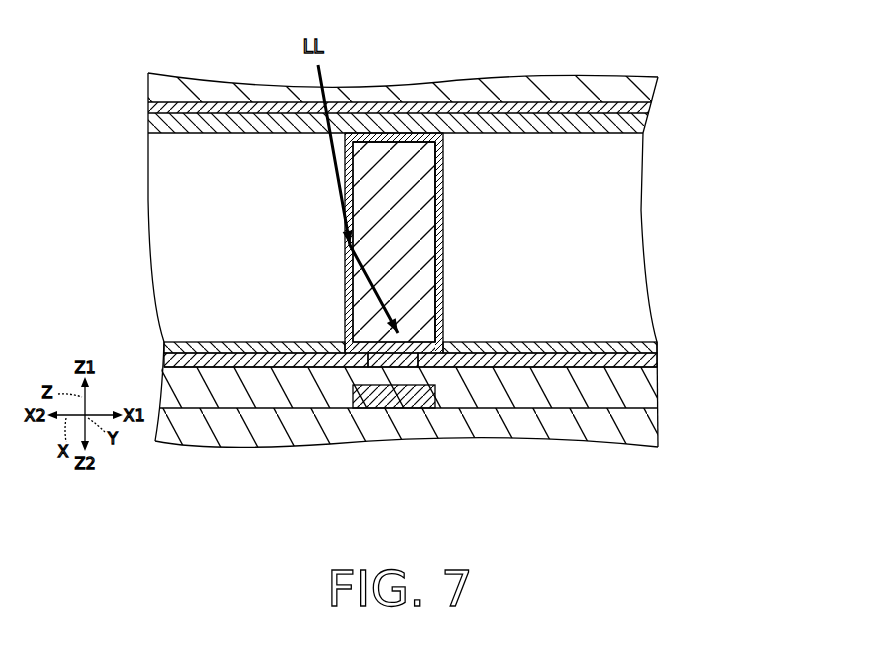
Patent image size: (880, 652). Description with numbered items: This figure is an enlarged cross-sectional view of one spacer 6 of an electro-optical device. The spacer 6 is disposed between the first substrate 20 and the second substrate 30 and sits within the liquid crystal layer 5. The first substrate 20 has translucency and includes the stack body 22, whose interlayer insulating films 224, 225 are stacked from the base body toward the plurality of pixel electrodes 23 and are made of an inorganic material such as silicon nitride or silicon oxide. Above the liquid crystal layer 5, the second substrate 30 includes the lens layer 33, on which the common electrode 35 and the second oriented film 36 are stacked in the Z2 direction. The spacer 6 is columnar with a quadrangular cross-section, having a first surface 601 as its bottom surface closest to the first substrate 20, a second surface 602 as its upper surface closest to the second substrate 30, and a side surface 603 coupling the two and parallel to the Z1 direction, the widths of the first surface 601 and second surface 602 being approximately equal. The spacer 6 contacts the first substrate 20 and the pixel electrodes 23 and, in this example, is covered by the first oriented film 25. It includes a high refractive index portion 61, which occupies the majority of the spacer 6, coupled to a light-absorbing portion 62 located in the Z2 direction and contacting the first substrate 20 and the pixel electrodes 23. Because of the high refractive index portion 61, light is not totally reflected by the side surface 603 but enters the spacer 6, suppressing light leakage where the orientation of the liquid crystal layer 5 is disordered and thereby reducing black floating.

The second substrate 30 is at (424, 73).
The lens layer 33 is at (608, 91).
The common electrode 35 is at (625, 108).
The second oriented film 36 is at (625, 125).
The liquid crystal layer 5 is at (610, 253).
The spacer 6 is at (444, 266).
The high refractive index portion 61 is at (407, 268).
The light-absorbing portion 62 is at (430, 266).
The first surface 601 is at (384, 368).
The second surface 602 is at (396, 101).
The side surface 603 is at (450, 176).
The first substrate 20 is at (458, 400).
The stack body 22 is at (458, 408).
The interlayer insulating film 224 is at (641, 425).
The interlayer insulating film 225 is at (641, 384).
The pixel electrodes 23 is at (648, 358).
The first oriented film 25 is at (614, 337).